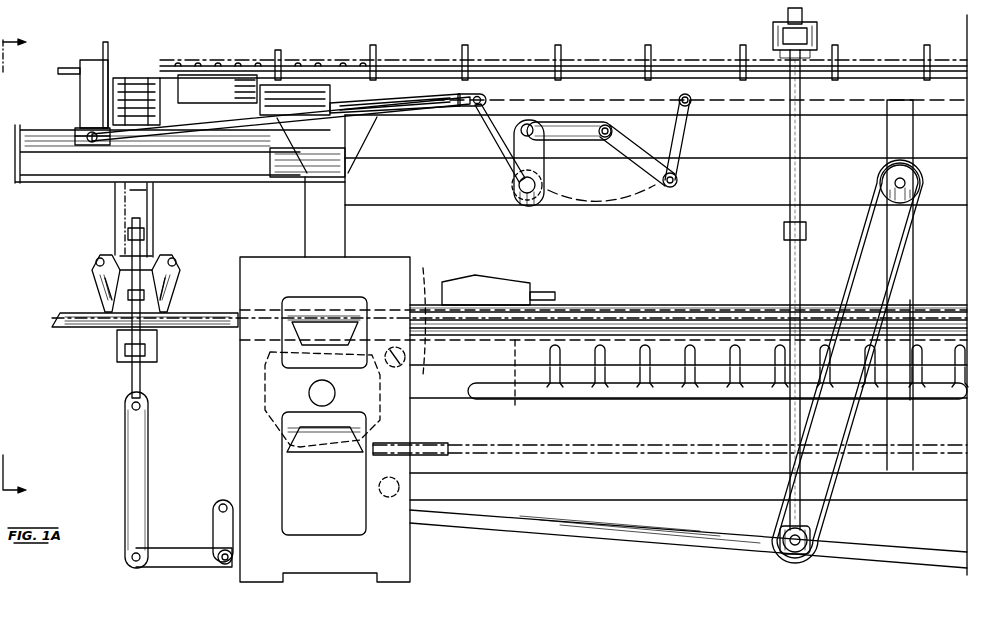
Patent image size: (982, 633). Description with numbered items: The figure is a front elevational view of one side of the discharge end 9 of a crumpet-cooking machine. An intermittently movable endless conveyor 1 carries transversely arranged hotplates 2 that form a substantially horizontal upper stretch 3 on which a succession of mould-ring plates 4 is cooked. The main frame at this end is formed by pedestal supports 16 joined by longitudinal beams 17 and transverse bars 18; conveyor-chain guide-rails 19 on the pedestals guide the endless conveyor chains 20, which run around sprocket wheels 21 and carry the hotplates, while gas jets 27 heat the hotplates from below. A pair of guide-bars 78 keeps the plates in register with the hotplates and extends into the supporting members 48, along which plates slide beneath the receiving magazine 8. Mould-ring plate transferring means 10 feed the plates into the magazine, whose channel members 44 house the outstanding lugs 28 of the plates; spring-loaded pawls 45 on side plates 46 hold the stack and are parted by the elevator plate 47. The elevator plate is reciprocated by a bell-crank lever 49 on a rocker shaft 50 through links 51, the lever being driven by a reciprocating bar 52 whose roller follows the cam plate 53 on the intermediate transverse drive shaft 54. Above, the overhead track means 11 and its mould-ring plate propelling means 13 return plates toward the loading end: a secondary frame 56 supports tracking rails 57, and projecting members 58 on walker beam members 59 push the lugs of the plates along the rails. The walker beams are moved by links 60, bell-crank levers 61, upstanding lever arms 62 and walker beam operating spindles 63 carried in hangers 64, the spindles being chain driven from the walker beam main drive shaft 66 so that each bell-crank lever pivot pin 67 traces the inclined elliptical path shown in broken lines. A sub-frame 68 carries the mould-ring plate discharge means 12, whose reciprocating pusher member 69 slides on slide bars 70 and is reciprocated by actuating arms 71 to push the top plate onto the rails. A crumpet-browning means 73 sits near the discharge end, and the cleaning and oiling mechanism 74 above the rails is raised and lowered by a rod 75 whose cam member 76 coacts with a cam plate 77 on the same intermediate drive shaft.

The endless conveyor 1 is at (200, 333).
The hotplates 2 is at (330, 468).
The upper stretch 3 is at (424, 381).
The mould-ring plates 4 is at (160, 232).
The receiving magazine 8 is at (112, 195).
The discharge end 9 is at (72, 252).
The mould-ring plate transferring means 10 is at (172, 252).
The overhead track means 11 is at (226, 74).
The mould-ring plate discharge means 12 is at (62, 66).
The mould-ring plate propelling means 13 is at (290, 84).
The pedestal supports 16 is at (238, 388).
The longitudinal beams 17 is at (672, 490).
The transverse bars 18 is at (380, 366).
The conveyor-chain guide-rails 19 is at (508, 392).
The endless conveyor chains 20 is at (436, 443).
The sprocket wheels 21 is at (385, 402).
The gas jets 27 is at (633, 380).
The outstanding lugs 28 is at (192, 66).
The channel members 44 is at (150, 194).
The spring-loaded pawls 45 is at (95, 283).
The side plates 46 is at (178, 262).
The elevator plate 47 is at (114, 348).
The supporting members 48 is at (58, 330).
The bell-crank lever 49 is at (178, 546).
The rocker shaft 50 is at (222, 566).
The links 51 is at (148, 446).
The reciprocating bar 52 is at (462, 522).
The cam plate 53 is at (770, 552).
The intermediate transverse drive shaft 54 is at (812, 538).
The secondary frame 56 is at (425, 92).
The tracking rails 57 is at (500, 66).
The projecting members 58 is at (648, 50).
The walker beam members 59 is at (698, 90).
The links 60 is at (688, 134).
The bell-crank levers 61 is at (655, 186).
The upstanding lever arms 62 is at (515, 150).
The walker beam operating spindles 63 is at (512, 200).
The bearing plates or hangers 64 is at (492, 140).
The walker beam main drive shaft 66 is at (906, 183).
The bell-crank lever pivot pin 67 is at (614, 130).
The sub-frame 68 is at (270, 178).
The reciprocating pusher member 69 is at (120, 85).
The slide bars 70 is at (42, 130).
The actuating arms 71 is at (248, 118).
The crumpet-browning means 73 is at (495, 280).
The cleaning and oiling mechanism 74 is at (818, 28).
The rod 75 is at (800, 272).
The cam member 76 is at (790, 478).
The cam plate 77 is at (848, 512).
The guide-bars 78 is at (742, 303).